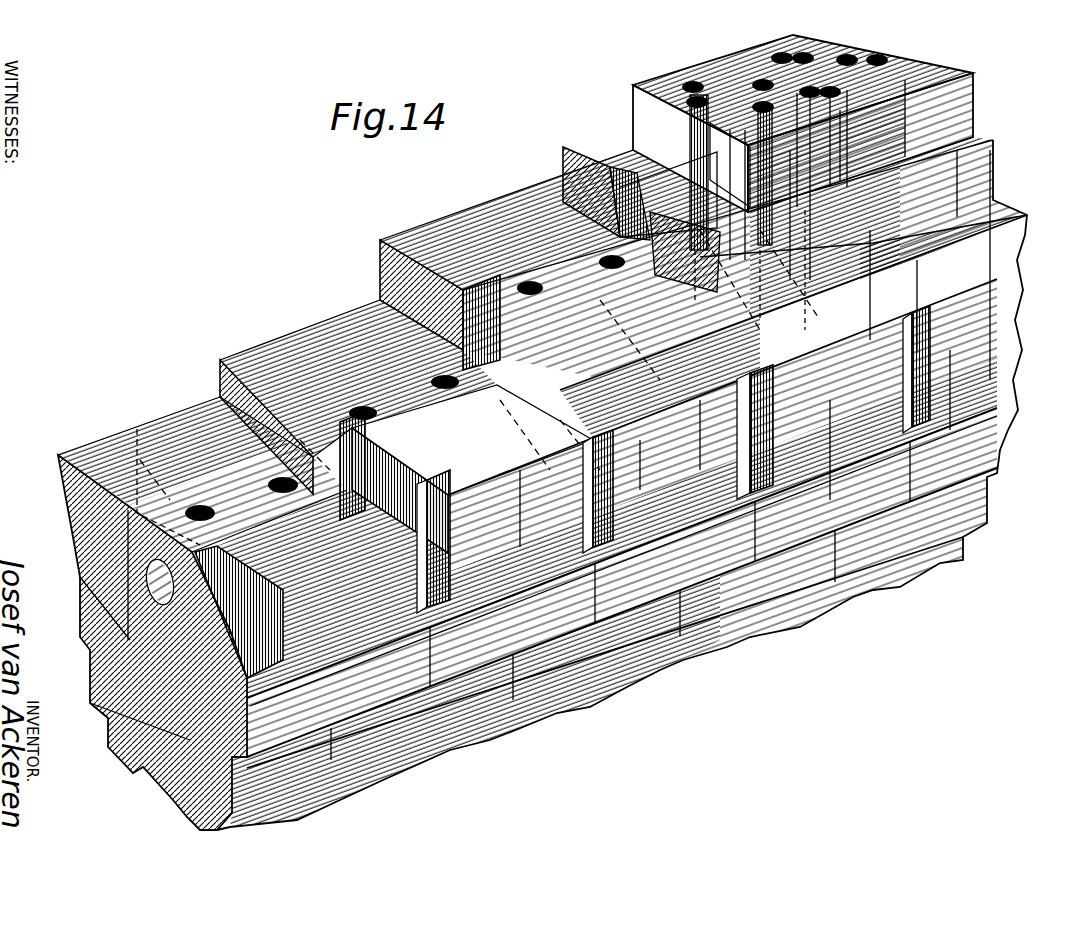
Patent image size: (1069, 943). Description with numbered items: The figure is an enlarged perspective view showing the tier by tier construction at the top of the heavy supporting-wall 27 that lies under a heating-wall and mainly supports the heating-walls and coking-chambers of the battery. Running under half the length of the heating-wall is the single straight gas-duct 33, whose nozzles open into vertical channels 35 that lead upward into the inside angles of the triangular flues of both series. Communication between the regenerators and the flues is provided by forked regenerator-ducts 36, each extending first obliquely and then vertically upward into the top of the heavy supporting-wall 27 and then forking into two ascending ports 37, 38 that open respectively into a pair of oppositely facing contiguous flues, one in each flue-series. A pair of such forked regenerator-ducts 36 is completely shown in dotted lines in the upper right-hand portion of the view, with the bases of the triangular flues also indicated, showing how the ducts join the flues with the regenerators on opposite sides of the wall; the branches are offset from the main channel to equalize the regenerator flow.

The heavy supporting-wall 27 is at (138, 770).
The straight gas-duct 33 is at (64, 542).
The vertical channels 35 is at (268, 478).
The forked regenerator-ducts 36 is at (337, 395).
The ascending port 37 is at (680, 98).
The ascending port 38 is at (790, 85).